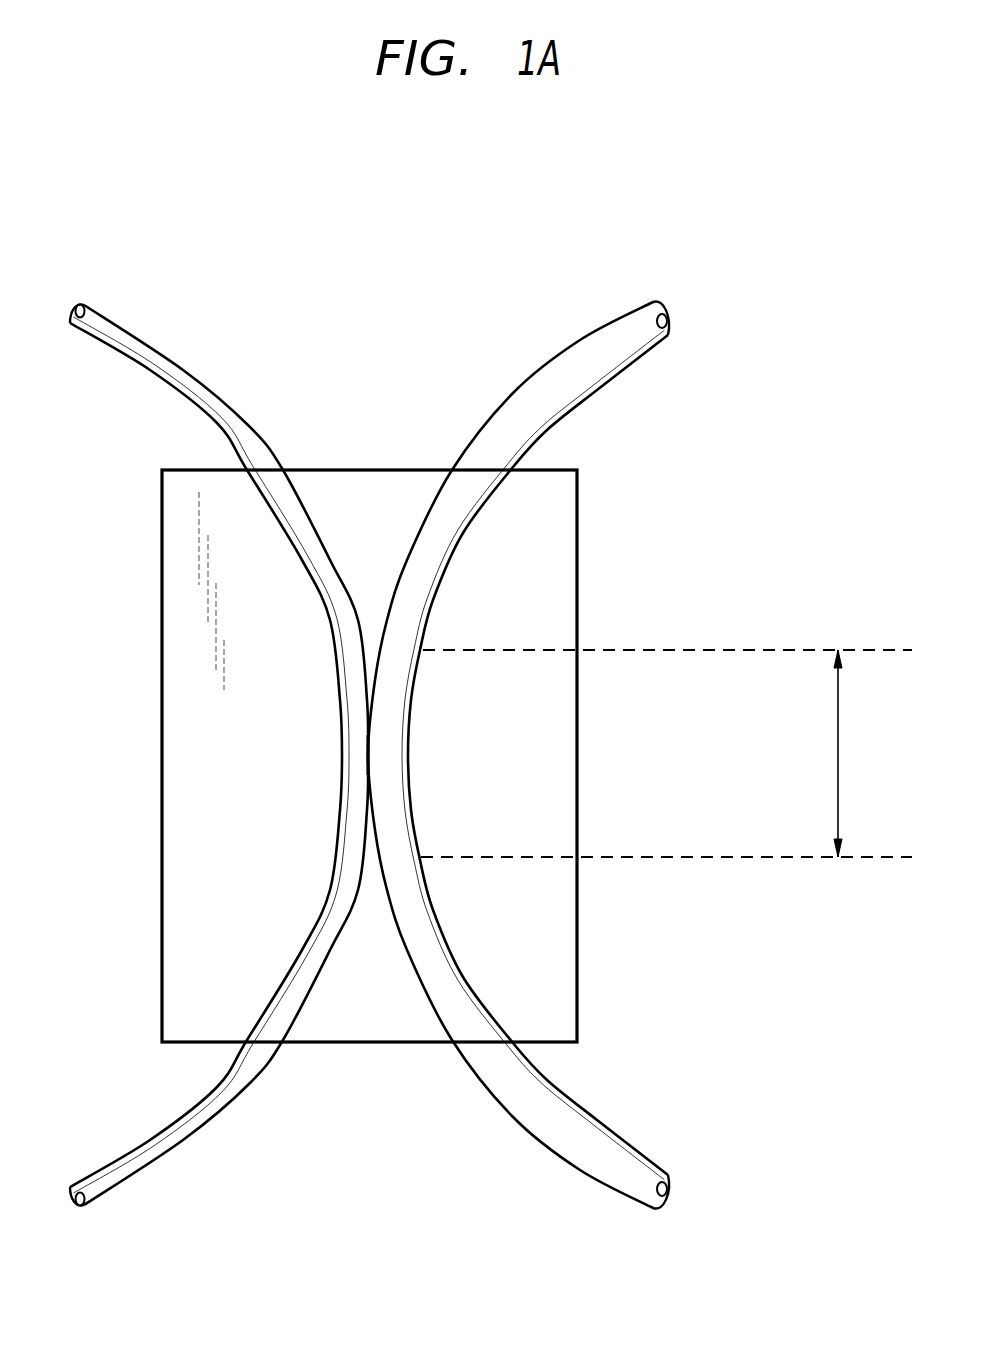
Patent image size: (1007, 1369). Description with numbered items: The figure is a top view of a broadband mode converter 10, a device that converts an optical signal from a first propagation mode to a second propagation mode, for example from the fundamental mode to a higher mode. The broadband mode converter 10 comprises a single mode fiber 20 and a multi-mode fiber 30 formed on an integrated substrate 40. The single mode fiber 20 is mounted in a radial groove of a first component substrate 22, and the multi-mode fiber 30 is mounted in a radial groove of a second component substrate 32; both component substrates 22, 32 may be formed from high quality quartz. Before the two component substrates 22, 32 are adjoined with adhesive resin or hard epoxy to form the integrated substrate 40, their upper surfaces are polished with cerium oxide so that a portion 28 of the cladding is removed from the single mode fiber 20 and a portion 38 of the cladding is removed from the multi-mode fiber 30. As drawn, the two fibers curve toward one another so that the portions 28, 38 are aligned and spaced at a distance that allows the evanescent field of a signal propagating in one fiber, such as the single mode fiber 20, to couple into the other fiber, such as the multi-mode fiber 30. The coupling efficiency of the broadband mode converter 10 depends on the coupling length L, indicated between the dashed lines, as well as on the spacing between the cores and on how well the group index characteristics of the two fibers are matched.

The broadband mode converter 10 is at (713, 225).
The single mode fiber 20 is at (127, 1172).
The first component substrate 22 is at (252, 776).
The portion of cladding removed from single mode fiber 28 is at (368, 752).
The multi-mode fiber 30 is at (615, 1150).
The second component substrate 32 is at (514, 776).
The portion of cladding removed from multi-mode fiber 38 is at (369, 762).
The integrated substrate 40 is at (373, 1045).
The coupling length L is at (838, 760).